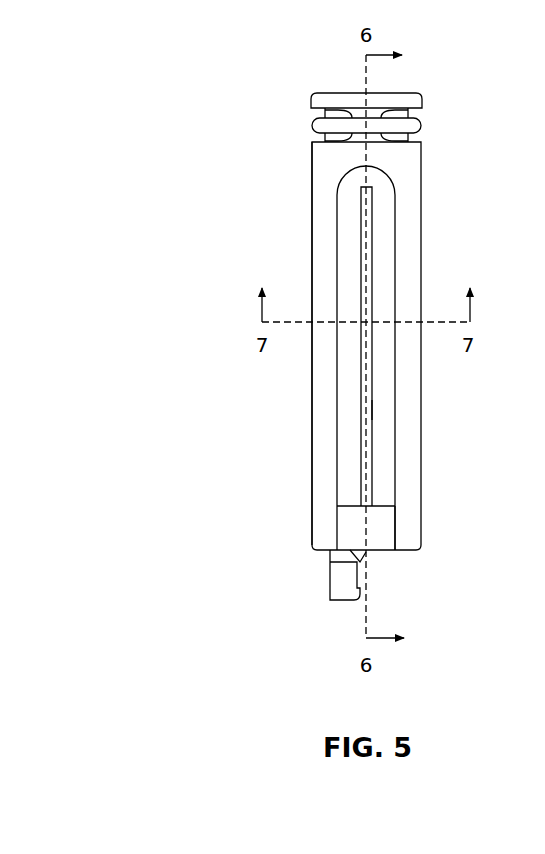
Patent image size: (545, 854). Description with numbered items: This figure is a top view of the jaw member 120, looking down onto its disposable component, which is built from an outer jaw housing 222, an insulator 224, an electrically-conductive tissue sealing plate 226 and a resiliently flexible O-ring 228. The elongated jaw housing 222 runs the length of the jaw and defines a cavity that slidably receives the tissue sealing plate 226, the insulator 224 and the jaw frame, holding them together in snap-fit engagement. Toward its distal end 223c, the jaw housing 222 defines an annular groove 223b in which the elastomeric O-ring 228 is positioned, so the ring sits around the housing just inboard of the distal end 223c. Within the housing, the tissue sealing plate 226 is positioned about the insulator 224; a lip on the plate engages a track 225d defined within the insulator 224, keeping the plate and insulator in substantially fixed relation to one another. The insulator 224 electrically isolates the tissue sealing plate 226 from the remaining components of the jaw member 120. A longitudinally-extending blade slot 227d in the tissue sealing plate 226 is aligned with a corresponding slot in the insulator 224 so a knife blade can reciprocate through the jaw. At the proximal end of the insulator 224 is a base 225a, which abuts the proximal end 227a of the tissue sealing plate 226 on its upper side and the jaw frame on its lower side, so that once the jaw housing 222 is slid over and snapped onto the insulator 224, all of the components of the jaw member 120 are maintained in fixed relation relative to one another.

The jaw member 120 is at (424, 220).
The outer jaw housing 222 is at (325, 466).
The annular groove 223b is at (418, 113).
The distal end 223c is at (319, 100).
The resiliently flexible ring 228 is at (318, 126).
The electrically-conductive tissue sealing plate 226 is at (383, 460).
The proximal end 227a is at (383, 495).
The longitudinally-extending blade slot 227d is at (361, 422).
The track 225d is at (372, 405).
The base 225a is at (348, 538).
The insulator 224 is at (380, 540).